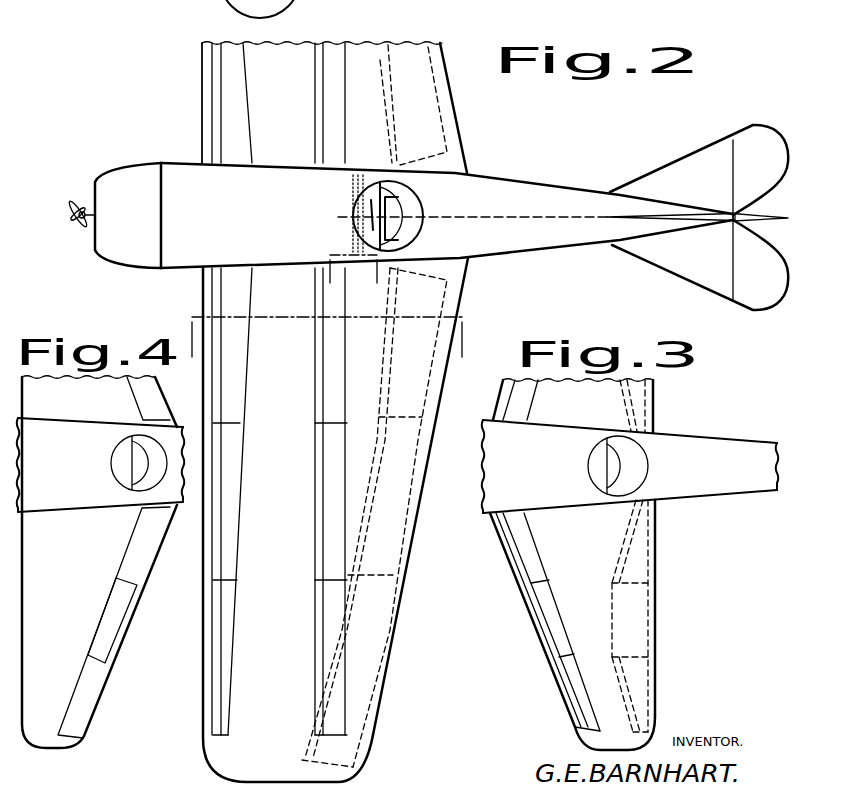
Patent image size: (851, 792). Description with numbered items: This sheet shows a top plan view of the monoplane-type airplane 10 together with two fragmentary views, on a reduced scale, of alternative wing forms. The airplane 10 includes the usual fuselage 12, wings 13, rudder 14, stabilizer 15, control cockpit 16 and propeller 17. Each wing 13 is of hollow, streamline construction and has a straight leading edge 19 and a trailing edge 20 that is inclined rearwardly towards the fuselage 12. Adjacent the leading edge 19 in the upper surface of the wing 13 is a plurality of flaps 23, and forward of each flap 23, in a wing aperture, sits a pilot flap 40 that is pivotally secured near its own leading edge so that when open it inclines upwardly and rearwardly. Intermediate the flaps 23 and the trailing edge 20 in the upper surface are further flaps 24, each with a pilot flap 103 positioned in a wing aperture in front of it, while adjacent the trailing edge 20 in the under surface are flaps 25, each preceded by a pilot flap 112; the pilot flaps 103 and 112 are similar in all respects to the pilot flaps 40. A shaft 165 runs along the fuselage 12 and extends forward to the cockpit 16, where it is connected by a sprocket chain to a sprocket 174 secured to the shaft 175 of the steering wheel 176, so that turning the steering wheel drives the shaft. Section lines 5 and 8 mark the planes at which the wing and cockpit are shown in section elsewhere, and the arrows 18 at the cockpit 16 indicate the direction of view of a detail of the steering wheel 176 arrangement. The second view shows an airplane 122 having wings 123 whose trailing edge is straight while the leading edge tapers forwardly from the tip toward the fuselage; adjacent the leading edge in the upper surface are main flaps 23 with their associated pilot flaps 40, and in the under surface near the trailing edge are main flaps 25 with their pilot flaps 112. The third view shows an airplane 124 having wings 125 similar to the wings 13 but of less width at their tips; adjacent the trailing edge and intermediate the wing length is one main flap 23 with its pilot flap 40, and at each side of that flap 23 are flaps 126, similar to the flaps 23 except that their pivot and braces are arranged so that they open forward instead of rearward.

In FIG. 2, the section line 5- 5 is at (326, 354).
In FIG. 2, the section line 8- 8 is at (353, 282).
In FIG. 2, the airplane 10 is at (149, 162).
In FIG. 2, the fuselage 12 is at (482, 183).
In FIG. 2, the wings 13 is at (290, 49).
In FIG. 2, the rudder 14 is at (770, 214).
In FIG. 2, the stabilizer 15 is at (758, 127).
In FIG. 2, the control cockpit 16 is at (402, 248).
In FIG. 2, the propeller 17 is at (72, 218).
In FIG. 2, the windshield 18 is at (398, 197).
In FIG. 2, the leading edge 19 is at (203, 130).
In FIG. 2, the trailing edge 20 is at (464, 118).
In FIG. 2, the flaps 23 is at (222, 76).
In FIG. 4, the flaps 23 is at (125, 608).
In FIG. 3, the flaps 23 is at (510, 407).
In FIG. 2, the flaps 24 is at (345, 95).
In FIG. 2, the flaps 25 is at (437, 47).
In FIG. 3, the flaps 25 is at (655, 388).
In FIG. 2, the pilot flap 40 is at (213, 102).
In FIG. 4, the pilot flap 40 is at (100, 605).
In FIG. 3, the pilot flap 40 is at (508, 393).
In FIG. 2, the pilot flaps 103 is at (314, 96).
In FIG. 2, the pilot flap 112 is at (380, 60).
In FIG. 3, the pilot flap 112 is at (624, 540).
In FIG. 3, the airplane 122 is at (725, 441).
In FIG. 3, the wings 123 is at (655, 404).
In FIG. 4, the airplane 124 is at (177, 506).
In FIG. 4, the wings 125 is at (170, 412).
In FIG. 4, the flaps 126 is at (152, 397).
In FIG. 2, the shaft 165 is at (518, 214).
In FIG. 2, the sprocket 174 is at (340, 220).
In FIG. 2, the shaft 175 is at (342, 208).
In FIG. 2, the steering wheel 176 is at (383, 234).